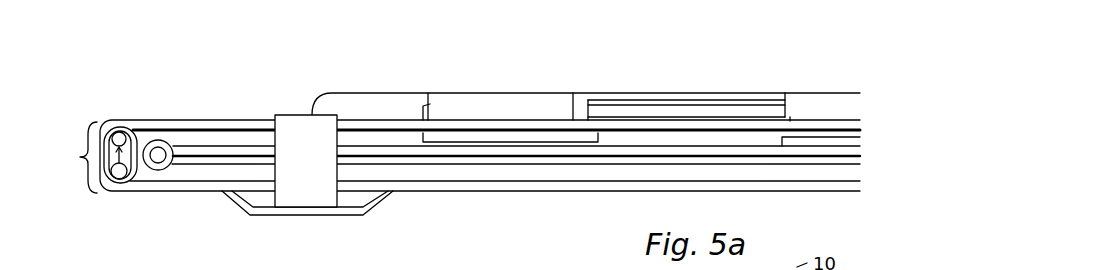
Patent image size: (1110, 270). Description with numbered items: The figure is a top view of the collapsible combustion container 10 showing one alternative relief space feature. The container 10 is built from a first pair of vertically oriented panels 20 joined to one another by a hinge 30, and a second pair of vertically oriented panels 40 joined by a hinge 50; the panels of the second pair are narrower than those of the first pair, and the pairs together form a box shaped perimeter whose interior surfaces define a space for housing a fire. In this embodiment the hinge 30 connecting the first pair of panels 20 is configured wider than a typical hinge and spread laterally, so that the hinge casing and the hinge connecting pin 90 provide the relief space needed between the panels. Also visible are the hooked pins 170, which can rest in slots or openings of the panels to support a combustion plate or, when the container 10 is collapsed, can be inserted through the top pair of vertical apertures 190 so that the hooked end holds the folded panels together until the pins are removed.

The collapsible combustion container 10 is at (610, 80).
The first pair of vertically oriented panels 20 is at (248, 120).
The hinge 30 is at (105, 118).
The second pair of vertically oriented panels 40 is at (543, 153).
The hinge 50 is at (158, 150).
The hinge connecting pin 90 is at (70, 157).
The hooked pins 170 is at (321, 137).
The top pair of vertical apertures 190 is at (259, 198).